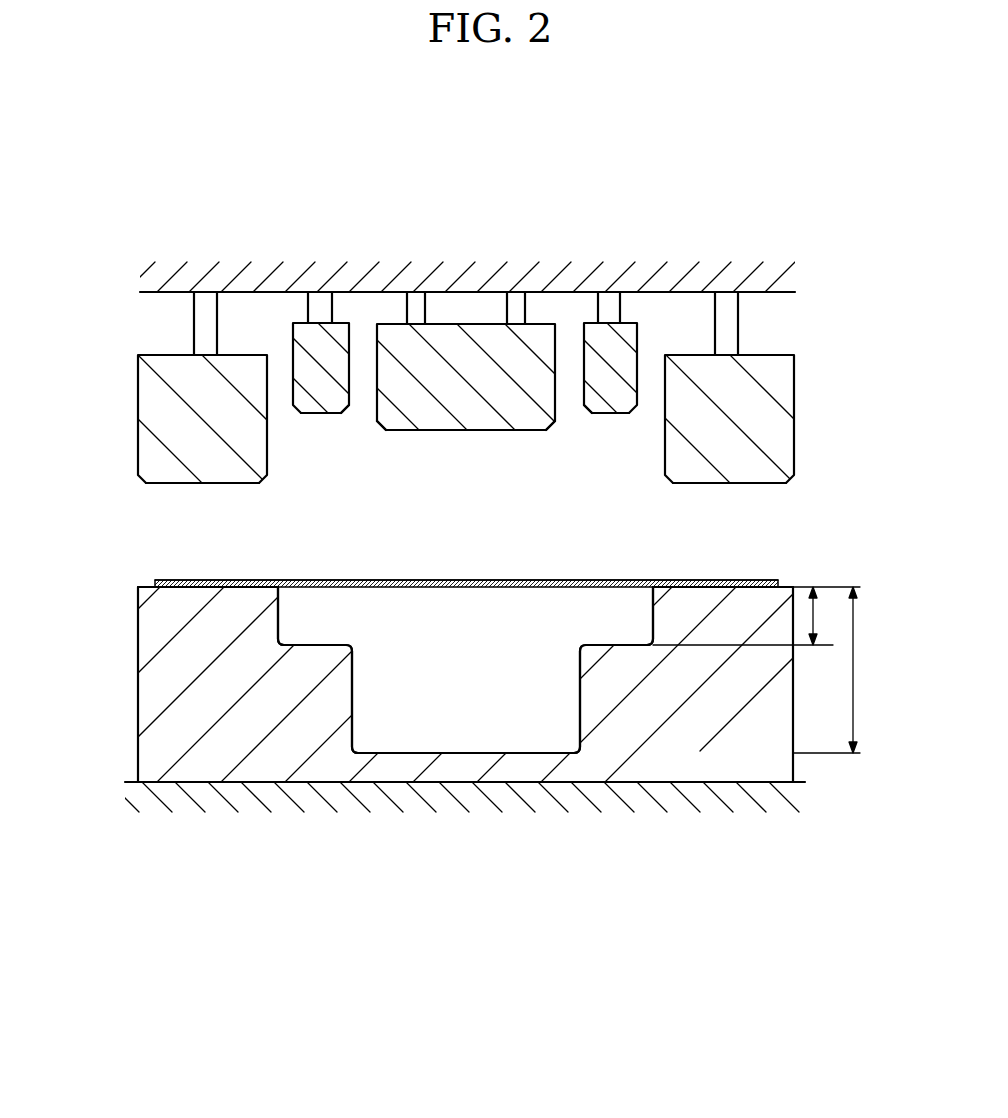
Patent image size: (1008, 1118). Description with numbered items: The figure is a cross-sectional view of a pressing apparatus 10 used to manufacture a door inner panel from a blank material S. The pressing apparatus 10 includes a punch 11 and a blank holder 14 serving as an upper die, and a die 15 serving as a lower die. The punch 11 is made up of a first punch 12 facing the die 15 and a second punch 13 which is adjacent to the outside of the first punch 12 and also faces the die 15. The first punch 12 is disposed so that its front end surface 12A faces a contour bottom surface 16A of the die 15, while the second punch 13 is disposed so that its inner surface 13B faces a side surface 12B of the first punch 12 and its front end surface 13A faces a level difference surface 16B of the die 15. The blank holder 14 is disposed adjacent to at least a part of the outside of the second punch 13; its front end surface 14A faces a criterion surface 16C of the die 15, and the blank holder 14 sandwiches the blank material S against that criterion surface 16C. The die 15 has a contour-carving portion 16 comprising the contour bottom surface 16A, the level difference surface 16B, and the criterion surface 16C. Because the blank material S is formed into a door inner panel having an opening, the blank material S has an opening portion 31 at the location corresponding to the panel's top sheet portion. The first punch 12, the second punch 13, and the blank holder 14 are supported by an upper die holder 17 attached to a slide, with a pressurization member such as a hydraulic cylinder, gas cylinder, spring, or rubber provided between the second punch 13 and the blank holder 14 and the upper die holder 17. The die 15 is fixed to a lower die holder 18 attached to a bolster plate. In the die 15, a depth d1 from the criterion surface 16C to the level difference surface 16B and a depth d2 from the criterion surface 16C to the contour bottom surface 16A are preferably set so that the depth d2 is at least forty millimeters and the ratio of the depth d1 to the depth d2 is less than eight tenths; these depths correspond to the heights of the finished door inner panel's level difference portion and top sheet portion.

The pressing apparatus 10 is at (118, 208).
The punch 11 is at (323, 158).
The first punch 12 is at (462, 344).
The front end surface 12A is at (470, 431).
The side surface 12B is at (377, 421).
The second punch 13 is at (467, 355).
The front end surface 13A is at (316, 414).
The inner surface 13B is at (350, 404).
The blank holder 14 is at (462, 345).
The front end surface 14A is at (175, 486).
The die 15 is at (137, 650).
The contour-carving portion 16 is at (465, 758).
The contour bottom surface 16A is at (466, 807).
The level difference surface 16B is at (315, 645).
The criterion surface 16C is at (232, 587).
The upper die holder 17 is at (795, 292).
The lower die holder 18 is at (805, 782).
The opening portion 31 is at (492, 579).
The blank material S is at (160, 579).
The depth d1 is at (756, 616).
The depth d2 is at (839, 670).